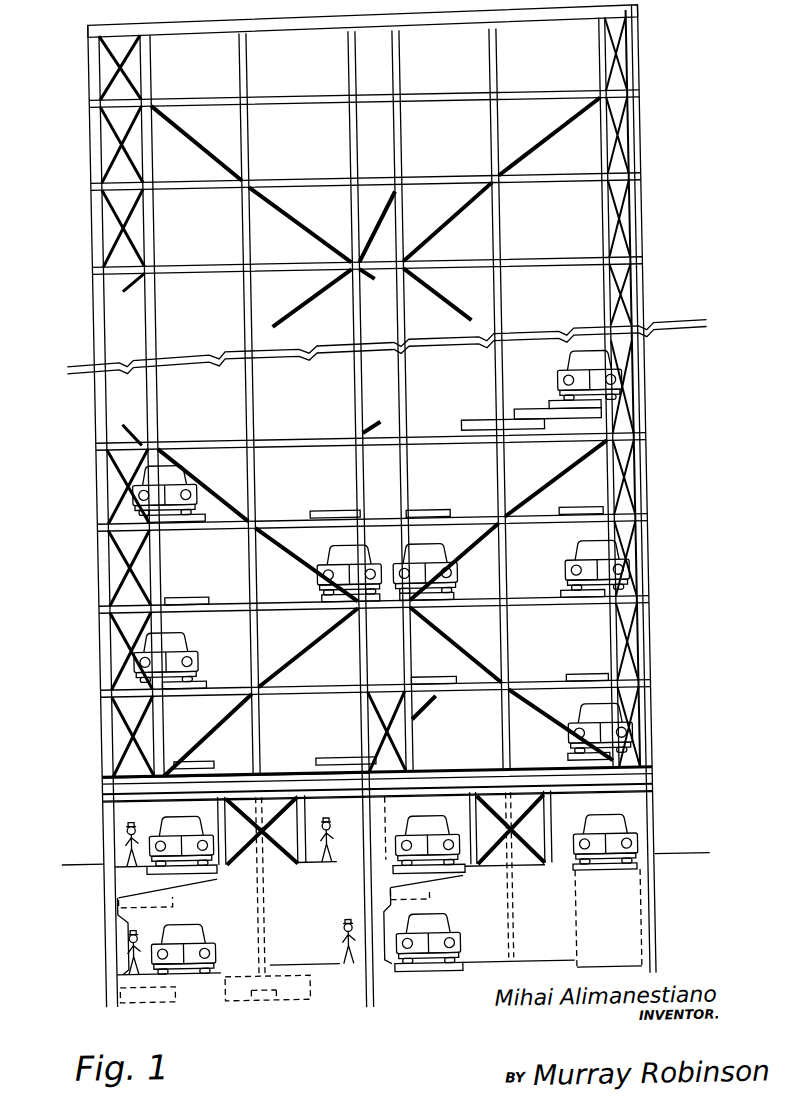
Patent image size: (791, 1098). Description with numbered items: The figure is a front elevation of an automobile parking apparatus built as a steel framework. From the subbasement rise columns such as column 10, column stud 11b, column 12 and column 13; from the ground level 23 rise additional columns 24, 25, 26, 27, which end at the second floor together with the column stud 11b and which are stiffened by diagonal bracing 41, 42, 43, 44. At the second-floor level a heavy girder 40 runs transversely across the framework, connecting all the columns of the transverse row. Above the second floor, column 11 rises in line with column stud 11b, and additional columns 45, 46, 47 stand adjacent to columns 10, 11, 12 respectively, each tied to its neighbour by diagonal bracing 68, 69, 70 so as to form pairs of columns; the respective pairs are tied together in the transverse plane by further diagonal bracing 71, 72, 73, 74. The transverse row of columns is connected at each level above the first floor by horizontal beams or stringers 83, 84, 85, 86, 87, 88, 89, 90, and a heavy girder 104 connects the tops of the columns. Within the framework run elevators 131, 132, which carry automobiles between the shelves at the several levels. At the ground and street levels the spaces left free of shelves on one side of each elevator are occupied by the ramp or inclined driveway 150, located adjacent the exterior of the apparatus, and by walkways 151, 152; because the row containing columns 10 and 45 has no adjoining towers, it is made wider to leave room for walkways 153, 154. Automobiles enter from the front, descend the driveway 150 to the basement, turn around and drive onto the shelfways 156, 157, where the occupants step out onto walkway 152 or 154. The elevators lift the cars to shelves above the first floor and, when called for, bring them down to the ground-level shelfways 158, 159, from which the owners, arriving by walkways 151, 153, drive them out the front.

The heavy girder 104 is at (529, 26).
The horizontal beam 89 is at (276, 104).
The horizontal beam 88 is at (298, 182).
The horizontal beam 87 is at (227, 270).
The horizontal beam 86 is at (288, 518).
The horizontal beam 85 is at (282, 600).
The horizontal beam 84 is at (290, 684).
The horizontal beam 90 is at (533, 684).
The horizontal beam 83 is at (266, 770).
The diagonal bracing 43 is at (286, 802).
The diagonal bracing 41 is at (515, 797).
The heavy girder 40 is at (623, 794).
The column 10 is at (95, 798).
The column 45 is at (152, 388).
The column 11 is at (354, 400).
The column stud 11b is at (355, 985).
The column 12 is at (639, 938).
The diagonal bracing 70 is at (645, 196).
The column 47 is at (606, 297).
The diagonal bracing 68 is at (128, 222).
The diagonal bracing 71 is at (212, 150).
The diagonal bracing 73 is at (541, 146).
The diagonal bracing 69 is at (375, 237).
The diagonal bracing 72 is at (305, 301).
The diagonal bracing 74 is at (440, 298).
The column 46 is at (404, 359).
The elevator 132 is at (473, 421).
The ground level 23 is at (674, 858).
The column 24 is at (208, 806).
The column 25 is at (298, 803).
The column 26 is at (461, 805).
The column 27 is at (546, 818).
The diagonal bracing 44 is at (274, 856).
The diagonal bracing 42 is at (514, 848).
The shelfway 158 is at (194, 885).
The shelfway 159 is at (441, 882).
The walkway 153 is at (116, 860).
The walkway 154 is at (114, 970).
The walkway 151 is at (327, 866).
The walkway 152 is at (307, 963).
The column 13 is at (388, 1032).
The shelfway 156 is at (193, 990).
The elevator 131 is at (278, 1009).
The shelfway 157 is at (445, 985).
The ramp or inclined driveway 150 is at (604, 957).